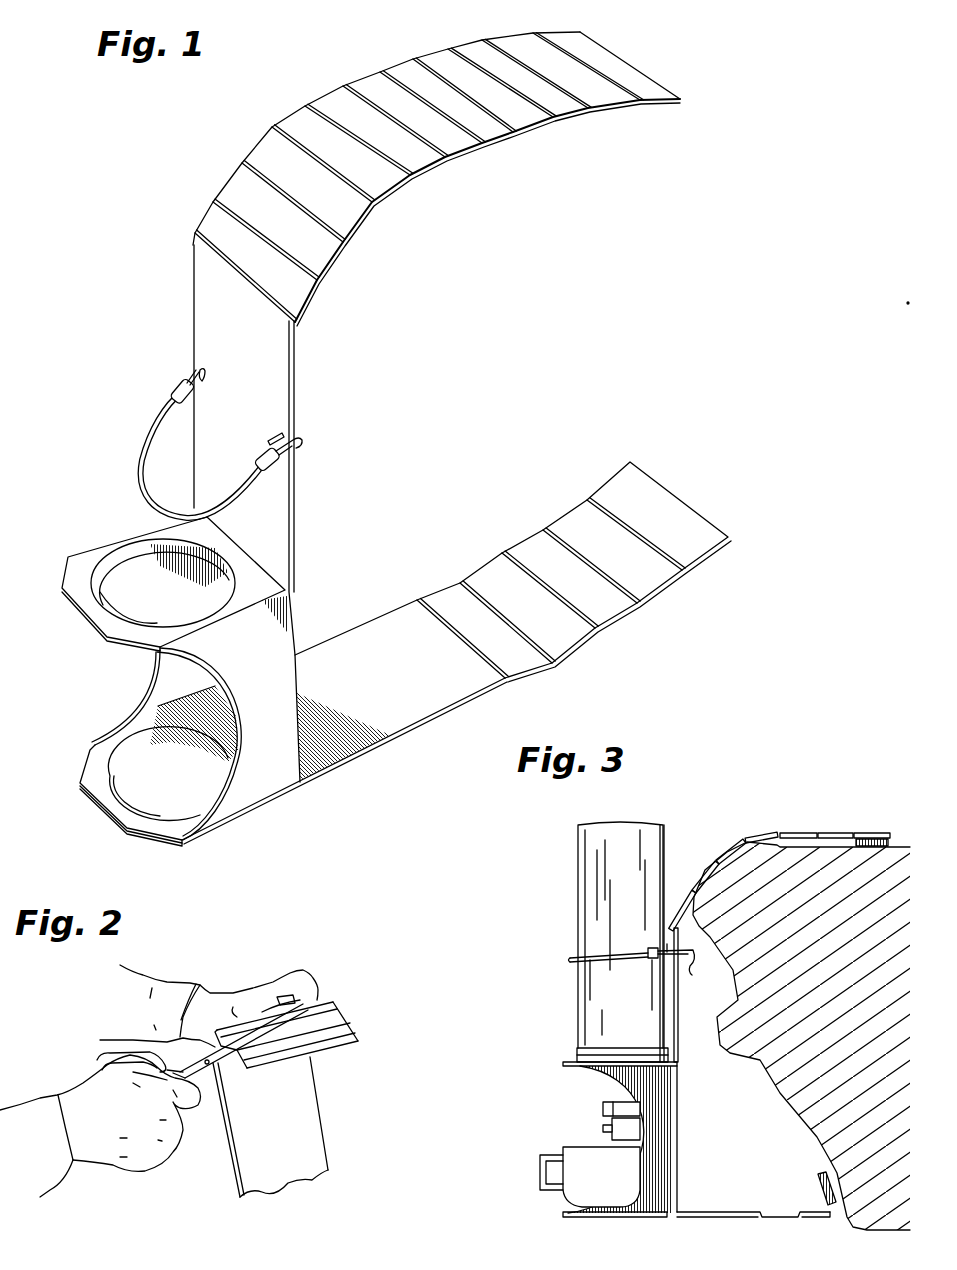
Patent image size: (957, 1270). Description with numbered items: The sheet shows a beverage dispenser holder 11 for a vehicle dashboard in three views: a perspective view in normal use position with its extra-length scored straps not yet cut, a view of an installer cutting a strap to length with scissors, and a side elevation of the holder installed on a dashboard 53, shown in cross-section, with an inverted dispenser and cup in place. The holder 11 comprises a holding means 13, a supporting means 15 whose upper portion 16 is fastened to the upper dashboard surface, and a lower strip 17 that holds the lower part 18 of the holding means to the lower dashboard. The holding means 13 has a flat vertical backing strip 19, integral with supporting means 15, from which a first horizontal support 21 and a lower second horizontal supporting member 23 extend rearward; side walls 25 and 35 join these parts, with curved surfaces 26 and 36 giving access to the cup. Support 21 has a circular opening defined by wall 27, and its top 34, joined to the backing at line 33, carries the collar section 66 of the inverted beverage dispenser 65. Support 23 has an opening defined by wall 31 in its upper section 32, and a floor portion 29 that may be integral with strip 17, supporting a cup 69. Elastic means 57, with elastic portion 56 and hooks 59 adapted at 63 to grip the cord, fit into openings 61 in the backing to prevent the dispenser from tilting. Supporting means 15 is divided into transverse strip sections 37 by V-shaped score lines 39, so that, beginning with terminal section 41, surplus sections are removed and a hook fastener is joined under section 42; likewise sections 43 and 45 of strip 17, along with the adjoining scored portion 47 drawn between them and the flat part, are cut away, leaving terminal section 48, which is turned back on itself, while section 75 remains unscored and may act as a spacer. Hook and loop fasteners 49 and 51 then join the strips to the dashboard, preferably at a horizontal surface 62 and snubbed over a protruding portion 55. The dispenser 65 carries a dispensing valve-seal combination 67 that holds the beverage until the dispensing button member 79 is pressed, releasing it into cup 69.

In FIG. 1, the holder 11 is at (312, 308).
In FIG. 1, the holding means 13 is at (300, 402).
In FIG. 3, the holding means 13 is at (683, 1020).
In FIG. 1, the supporting means 15 is at (463, 155).
In FIG. 1, the upper portion 16 is at (204, 258).
In FIG. 1, the strip 17 is at (480, 562).
In FIG. 2, the strip 17 is at (332, 1008).
In FIG. 3, the strip 17 is at (748, 1218).
In FIG. 1, the lower part 18 is at (218, 690).
In FIG. 1, the backing strip portion 19 is at (194, 295).
In FIG. 3, the backing strip portion 19 is at (673, 980).
In FIG. 1, the first horizontal support 21 is at (62, 580).
In FIG. 3, the first horizontal support 21 is at (565, 1063).
In FIG. 1, the second horizontal supporting member 23 is at (85, 765).
In FIG. 1, the side wall 25 is at (155, 682).
In FIG. 1, the curved surface 26 is at (155, 667).
In FIG. 1, the wall 27 is at (100, 590).
In FIG. 1, the floor portion 29 is at (123, 787).
In FIG. 3, the floor portion 29 is at (570, 1218).
In FIG. 1, the wall 31 is at (123, 790).
In FIG. 1, the upper section 32 is at (143, 822).
In FIG. 1, the line 33 is at (260, 562).
In FIG. 1, the top 34 is at (240, 587).
In FIG. 1, the side wall 35 is at (265, 793).
In FIG. 3, the side wall 35 is at (660, 1150).
In FIG. 1, the curved surface 36 is at (240, 762).
In FIG. 1, the transverse strip sections 37 is at (265, 143).
In FIG. 3, the transverse strip sections 37 is at (727, 858).
In FIG. 1, the score lines 39 is at (240, 163).
In FIG. 3, the score lines 39 is at (818, 833).
In FIG. 1, the terminal section 41 is at (622, 62).
In FIG. 1, the section 42 is at (395, 60).
In FIG. 1, the section 43 is at (623, 478).
In FIG. 2, the section 43 is at (357, 1025).
In FIG. 1, the section 45 is at (645, 582).
In FIG. 1, the slat 47 is at (598, 628).
In FIG. 1, the terminal section 48 is at (520, 548).
In FIG. 3, the terminal section 48 is at (820, 1183).
In FIG. 3, the hook and loop fastener 49 is at (890, 838).
In FIG. 3, the hook and loop fastener 51 is at (840, 1220).
In FIG. 3, the dashboard 53 is at (788, 1107).
In FIG. 3, the protruding portion 55 is at (773, 832).
In FIG. 1, the elastic portion 56 is at (136, 478).
In FIG. 1, the elastic means 57 is at (143, 440).
In FIG. 3, the elastic means 57 is at (572, 958).
In FIG. 1, the hooks 59 is at (196, 366).
In FIG. 3, the hooks 59 is at (692, 958).
In FIG. 1, the openings 61 is at (278, 432).
In FIG. 3, the horizontal dashboard surface 62 is at (828, 847).
In FIG. 1, the cord grip 63 is at (172, 386).
In FIG. 3, the beverage dispenser 65 is at (578, 903).
In FIG. 3, the collar section 66 is at (565, 1040).
In FIG. 3, the dispensing valve-seal combination 67 is at (600, 1110).
In FIG. 3, the cup 69 is at (565, 1200).
In FIG. 1, the section 75 is at (418, 712).
In FIG. 2, the section 75 is at (330, 1133).
In FIG. 3, the section 75 is at (700, 1210).
In FIG. 3, the dispensing button member 79 is at (603, 1128).